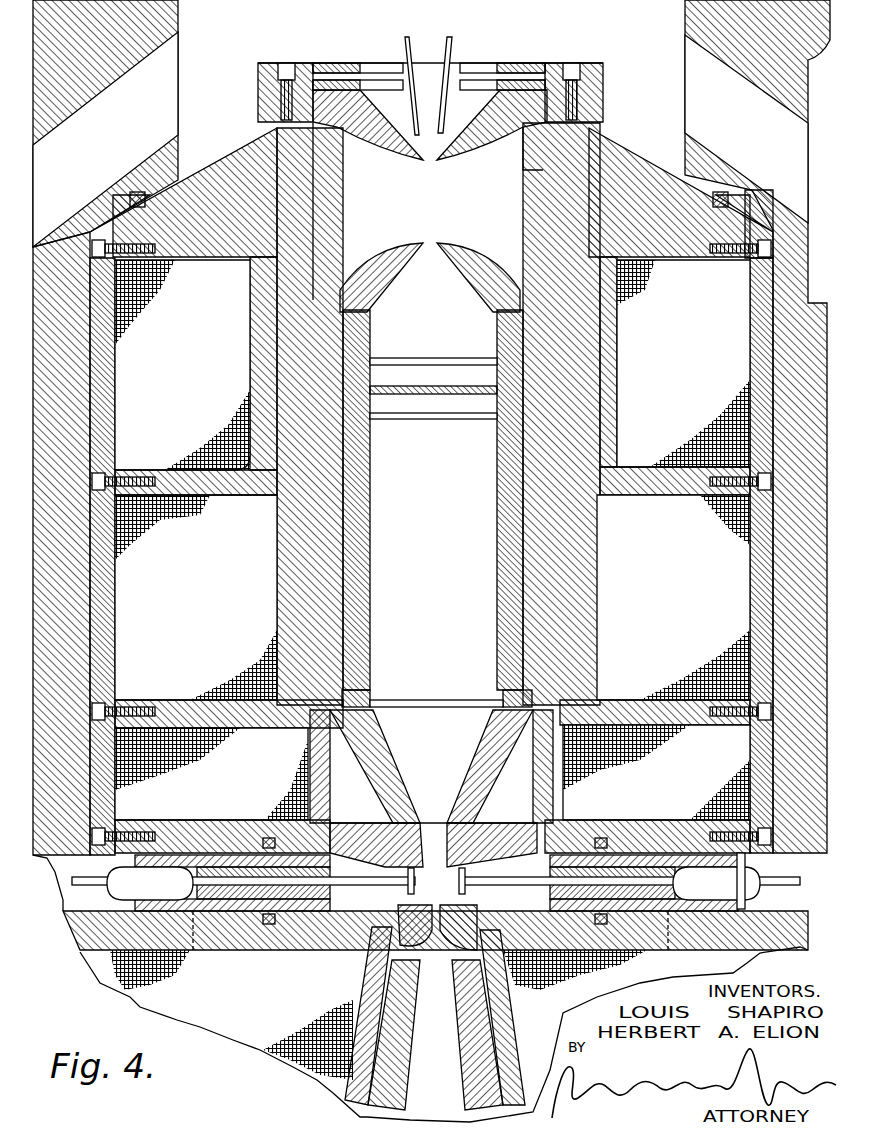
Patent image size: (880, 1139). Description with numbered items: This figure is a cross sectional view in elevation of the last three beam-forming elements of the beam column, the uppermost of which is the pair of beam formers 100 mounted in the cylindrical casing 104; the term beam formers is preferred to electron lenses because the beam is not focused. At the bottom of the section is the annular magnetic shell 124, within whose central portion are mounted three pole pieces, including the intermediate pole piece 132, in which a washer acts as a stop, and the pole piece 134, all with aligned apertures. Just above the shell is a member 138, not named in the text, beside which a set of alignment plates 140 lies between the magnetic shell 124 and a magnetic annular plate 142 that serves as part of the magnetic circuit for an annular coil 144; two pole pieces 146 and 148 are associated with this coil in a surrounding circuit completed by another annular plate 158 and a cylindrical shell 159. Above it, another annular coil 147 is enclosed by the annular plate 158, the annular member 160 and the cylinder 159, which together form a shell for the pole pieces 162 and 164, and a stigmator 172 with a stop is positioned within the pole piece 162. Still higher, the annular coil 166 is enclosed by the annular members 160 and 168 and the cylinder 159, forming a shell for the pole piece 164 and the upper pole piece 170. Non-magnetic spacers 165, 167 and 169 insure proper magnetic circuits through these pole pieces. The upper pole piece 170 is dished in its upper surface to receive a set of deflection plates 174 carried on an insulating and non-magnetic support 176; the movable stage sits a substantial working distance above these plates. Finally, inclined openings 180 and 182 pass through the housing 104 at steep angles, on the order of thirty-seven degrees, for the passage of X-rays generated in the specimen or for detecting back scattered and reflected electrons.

The pair of beam formers 100 is at (685, 586).
The cylindrical casing 104 is at (73, 625).
The annular magnetic shell 124 is at (182, 950).
The intermediate pole piece 132 is at (410, 1095).
The pole piece 134 is at (370, 963).
The bellows assembly 138 is at (326, 906).
The alignment plates 140 is at (470, 882).
The magnetic annular plate 142 is at (200, 833).
The annular coil 144 is at (223, 783).
The pole piece 146 is at (393, 847).
The annular coil 147 is at (233, 635).
The pole piece 148 is at (410, 793).
The annular plate 158 is at (215, 692).
The cylindrical shell 159 is at (115, 672).
The annular member 160 is at (183, 500).
The pole piece 162 is at (363, 473).
The pole piece 164 is at (367, 227).
The non-magnetic spacer 165 is at (293, 767).
The annular coil 166 is at (203, 387).
The non-magnetic spacer 167 is at (277, 558).
The annular member 168 is at (176, 268).
The non-magnetic spacer 169 is at (240, 300).
The upper pole piece 170 is at (403, 157).
The stigmator 172 is at (400, 380).
The deflection plates 174 is at (405, 47).
The insulating and non-magnetic support 176 is at (527, 63).
The inclined opening 180 is at (157, 105).
The inclined opening 182 is at (700, 88).